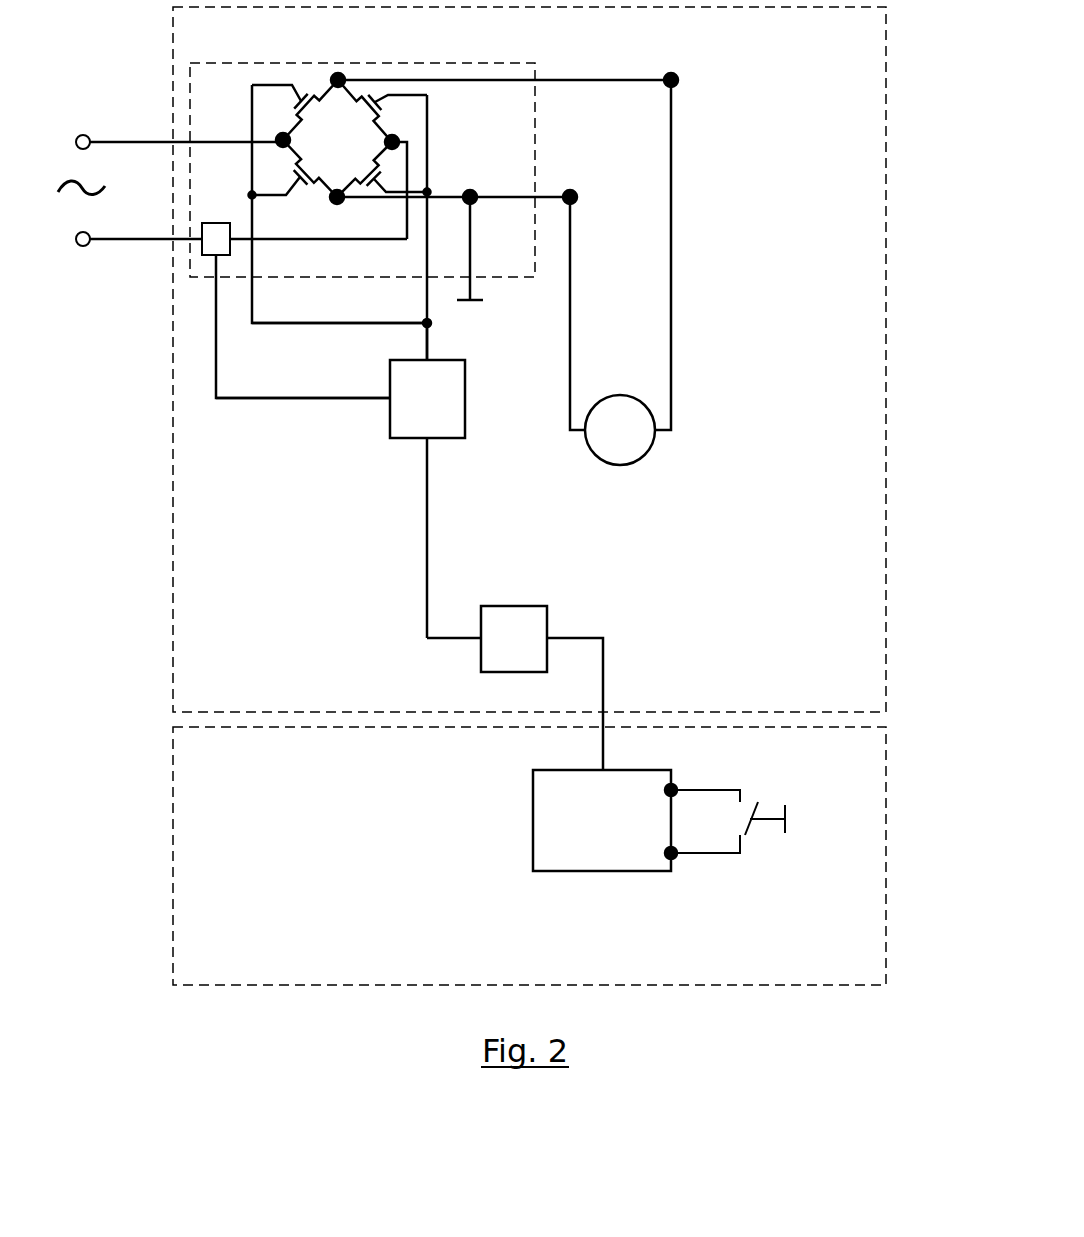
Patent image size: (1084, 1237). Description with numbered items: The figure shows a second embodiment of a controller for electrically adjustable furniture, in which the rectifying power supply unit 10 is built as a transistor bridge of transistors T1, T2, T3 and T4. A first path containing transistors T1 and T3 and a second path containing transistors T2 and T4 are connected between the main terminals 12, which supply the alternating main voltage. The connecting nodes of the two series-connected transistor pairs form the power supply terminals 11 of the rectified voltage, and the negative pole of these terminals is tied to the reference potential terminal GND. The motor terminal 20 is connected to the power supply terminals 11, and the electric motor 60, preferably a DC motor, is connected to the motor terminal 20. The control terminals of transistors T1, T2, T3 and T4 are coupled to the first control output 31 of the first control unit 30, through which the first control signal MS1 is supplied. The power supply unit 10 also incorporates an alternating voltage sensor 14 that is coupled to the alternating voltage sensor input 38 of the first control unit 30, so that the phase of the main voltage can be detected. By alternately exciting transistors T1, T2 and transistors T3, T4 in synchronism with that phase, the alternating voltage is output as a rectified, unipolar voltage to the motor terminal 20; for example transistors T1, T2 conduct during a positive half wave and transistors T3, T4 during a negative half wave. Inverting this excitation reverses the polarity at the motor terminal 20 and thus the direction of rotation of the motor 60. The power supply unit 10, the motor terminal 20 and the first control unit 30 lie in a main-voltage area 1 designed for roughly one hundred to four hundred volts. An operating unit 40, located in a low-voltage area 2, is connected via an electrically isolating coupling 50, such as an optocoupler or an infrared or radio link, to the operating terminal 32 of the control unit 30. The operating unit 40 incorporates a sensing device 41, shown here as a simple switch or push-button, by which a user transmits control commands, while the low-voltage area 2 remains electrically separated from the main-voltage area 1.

The main-voltage area 1 is at (888, 117).
The low-voltage area 2 is at (888, 755).
The rectifying power supply unit 10 is at (515, 63).
The power supply terminals 11 is at (577, 197).
The motor terminal 20 is at (668, 84).
The main terminals 12 is at (86, 150).
The alternating voltage sensor 14 is at (217, 222).
The first control unit 30 is at (359, 480).
The first control output 31 is at (433, 360).
The operating terminal 32 is at (425, 438).
The alternating voltage sensor input 38 is at (389, 398).
The operating unit 40 is at (583, 887).
The sensing device 41 is at (746, 835).
The electrically isolating coupling 50 is at (523, 606).
The electric motor 60 is at (645, 445).
The transistor T1 is at (294, 92).
The transistor T2 is at (377, 186).
The transistor T3 is at (383, 93).
The transistor T4 is at (303, 186).
The first control signal MS1 is at (339, 314).
The reference potential terminal GND is at (467, 302).